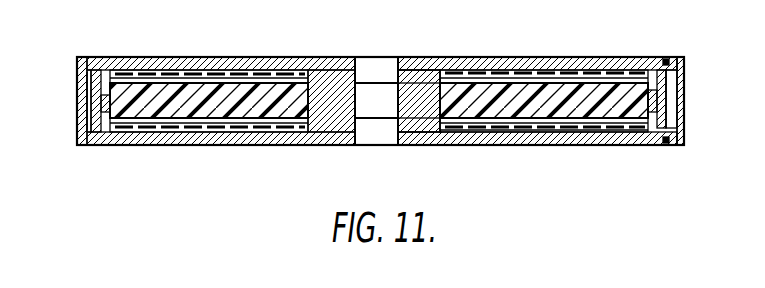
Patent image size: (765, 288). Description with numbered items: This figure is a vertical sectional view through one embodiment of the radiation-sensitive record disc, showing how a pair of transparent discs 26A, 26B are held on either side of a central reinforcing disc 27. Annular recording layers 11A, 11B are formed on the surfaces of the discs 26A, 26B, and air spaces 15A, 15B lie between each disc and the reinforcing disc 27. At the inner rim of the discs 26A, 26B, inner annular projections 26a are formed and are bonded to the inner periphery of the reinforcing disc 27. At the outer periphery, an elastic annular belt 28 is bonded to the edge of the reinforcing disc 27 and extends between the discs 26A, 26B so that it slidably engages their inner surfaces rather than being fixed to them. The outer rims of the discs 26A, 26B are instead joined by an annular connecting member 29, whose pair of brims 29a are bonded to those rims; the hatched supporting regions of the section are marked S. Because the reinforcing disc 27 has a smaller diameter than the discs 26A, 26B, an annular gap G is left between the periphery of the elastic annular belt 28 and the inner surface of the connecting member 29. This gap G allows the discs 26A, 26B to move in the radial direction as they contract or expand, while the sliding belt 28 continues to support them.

The support structure S is at (90, 57).
The annular gap G is at (92, 100).
The reinforcing disc 27 is at (204, 106).
The inner annular projections 26a is at (422, 72).
The recording layer 11A is at (477, 72).
The disc 26A is at (522, 72).
The air space 15A is at (574, 72).
The brims 29a is at (666, 58).
The annular connecting member 29 is at (685, 80).
The elastic annular belt 28 is at (682, 107).
The air space 15B is at (492, 124).
The disc 26B is at (548, 124).
The recording layer 11B is at (605, 124).